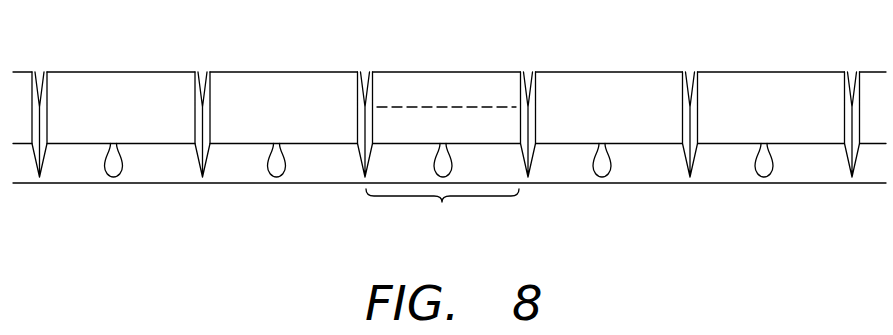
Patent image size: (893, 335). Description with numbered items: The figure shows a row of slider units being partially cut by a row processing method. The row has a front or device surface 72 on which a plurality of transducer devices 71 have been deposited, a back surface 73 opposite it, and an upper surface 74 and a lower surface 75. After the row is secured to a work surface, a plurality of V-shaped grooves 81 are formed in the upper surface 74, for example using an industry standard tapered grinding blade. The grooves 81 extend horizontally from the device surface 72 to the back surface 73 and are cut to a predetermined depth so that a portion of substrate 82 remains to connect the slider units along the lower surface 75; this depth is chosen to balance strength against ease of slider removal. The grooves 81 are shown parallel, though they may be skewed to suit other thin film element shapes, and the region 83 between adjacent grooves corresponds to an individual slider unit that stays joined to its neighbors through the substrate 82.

The transducer device 71 is at (447, 169).
The front surface 72 is at (487, 167).
The back surface 73 is at (438, 93).
The upper surface 74 is at (298, 93).
The lower surface 75 is at (407, 208).
The V-shaped groove 81 is at (40, 56).
The portion of substrate 82 is at (365, 184).
The segment between slits 83 is at (442, 211).